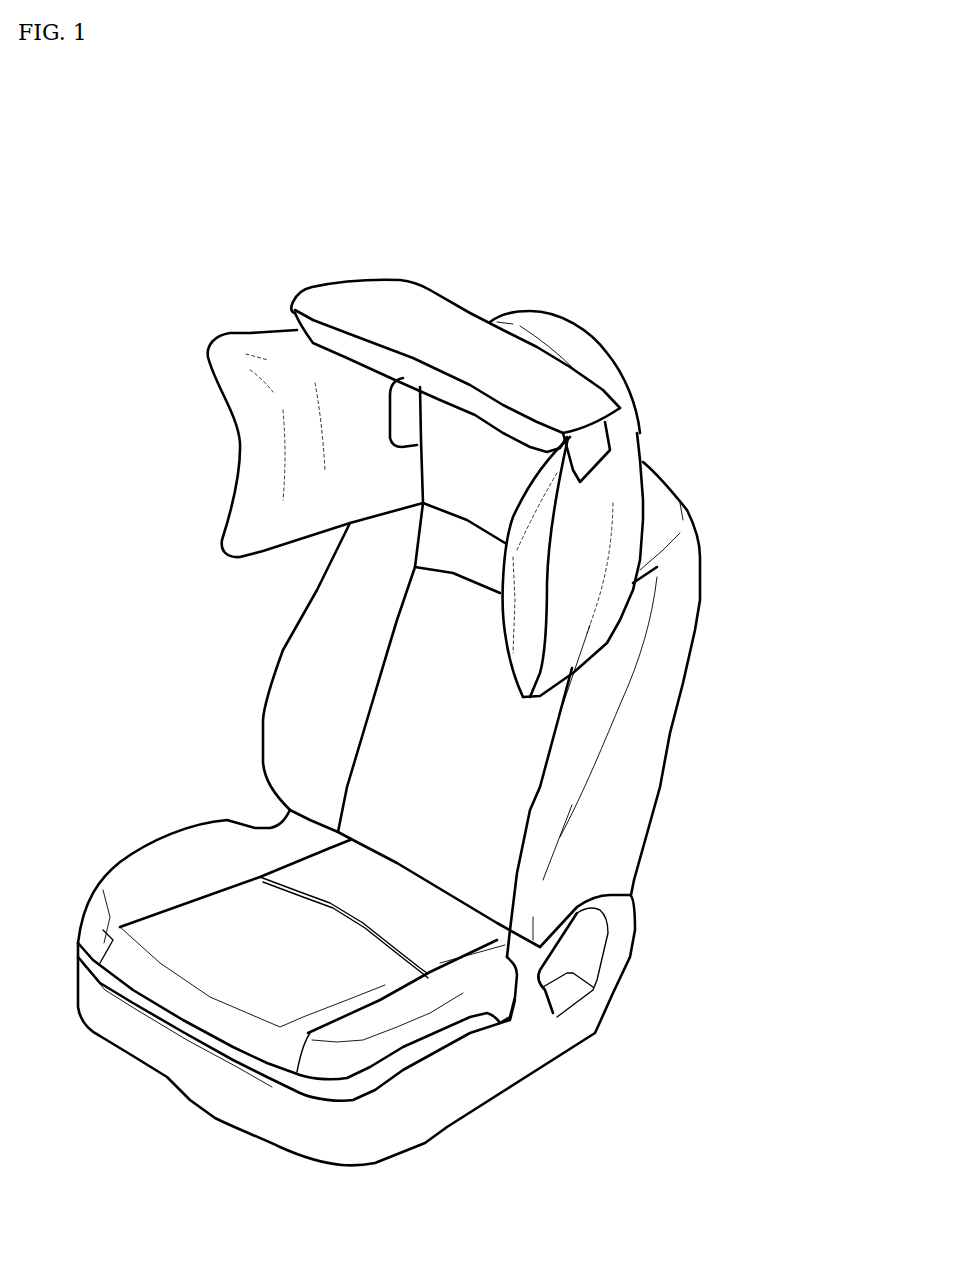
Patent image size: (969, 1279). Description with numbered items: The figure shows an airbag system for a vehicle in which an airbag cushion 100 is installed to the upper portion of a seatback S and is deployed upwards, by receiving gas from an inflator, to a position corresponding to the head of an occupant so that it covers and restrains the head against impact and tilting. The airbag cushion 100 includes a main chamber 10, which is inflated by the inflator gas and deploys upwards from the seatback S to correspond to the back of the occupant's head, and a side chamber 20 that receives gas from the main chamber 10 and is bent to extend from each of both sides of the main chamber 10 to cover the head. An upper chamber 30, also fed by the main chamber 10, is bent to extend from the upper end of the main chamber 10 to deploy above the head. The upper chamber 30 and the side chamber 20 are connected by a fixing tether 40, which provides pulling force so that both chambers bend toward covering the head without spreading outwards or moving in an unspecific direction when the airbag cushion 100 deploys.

The seatback S is at (678, 762).
The main chamber 10 is at (473, 460).
The side chamber 20 is at (610, 593).
The upper chamber 30 is at (400, 285).
The fixing tether 40 is at (590, 442).
The airbag cushion 100 is at (257, 261).